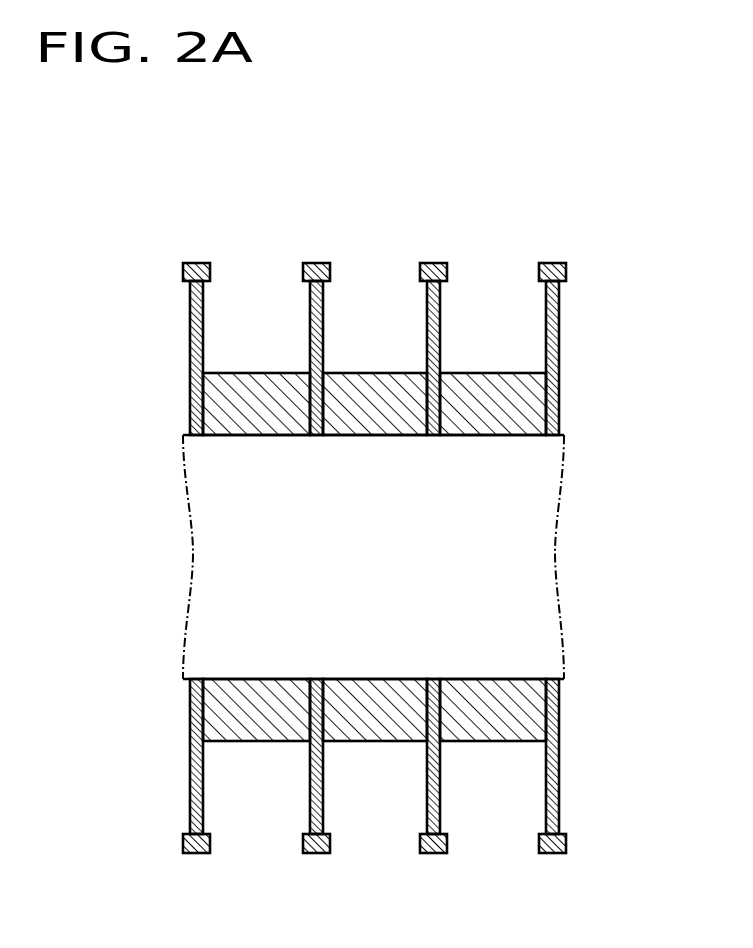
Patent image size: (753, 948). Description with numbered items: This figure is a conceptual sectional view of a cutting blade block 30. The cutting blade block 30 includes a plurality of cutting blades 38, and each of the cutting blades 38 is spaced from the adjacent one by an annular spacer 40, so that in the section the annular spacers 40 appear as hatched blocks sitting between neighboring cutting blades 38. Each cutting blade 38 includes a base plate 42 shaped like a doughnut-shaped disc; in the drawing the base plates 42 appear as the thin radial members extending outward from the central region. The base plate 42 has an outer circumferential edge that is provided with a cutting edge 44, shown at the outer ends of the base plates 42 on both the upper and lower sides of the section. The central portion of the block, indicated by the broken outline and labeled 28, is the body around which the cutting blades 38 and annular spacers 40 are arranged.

The substrate 28 is at (545, 515).
The cutting blade block 30 is at (316, 150).
The cutting blade 38 is at (198, 238).
The annular spacer 40 is at (230, 383).
The base plate 42 is at (190, 352).
The cutting edge 44 is at (183, 273).